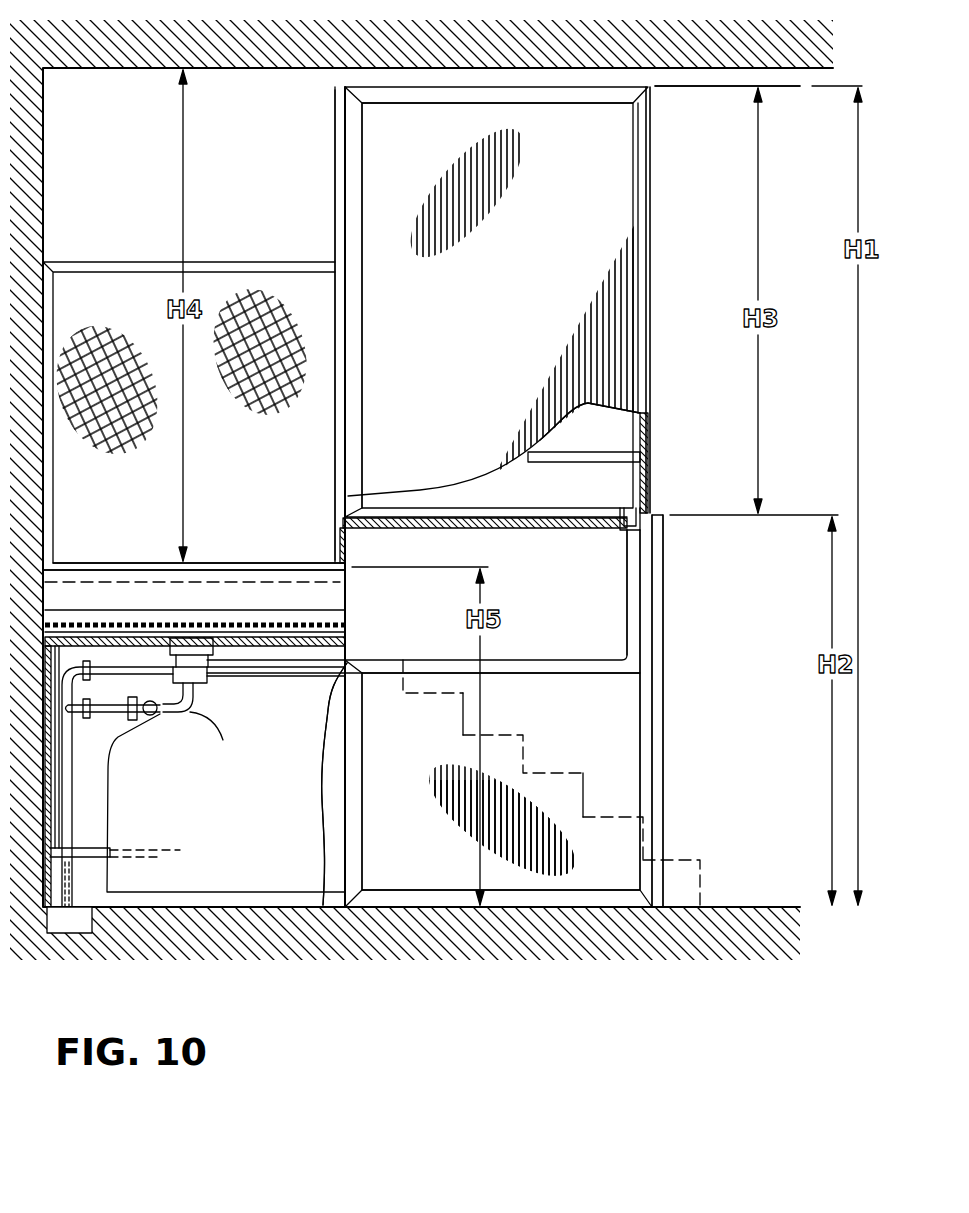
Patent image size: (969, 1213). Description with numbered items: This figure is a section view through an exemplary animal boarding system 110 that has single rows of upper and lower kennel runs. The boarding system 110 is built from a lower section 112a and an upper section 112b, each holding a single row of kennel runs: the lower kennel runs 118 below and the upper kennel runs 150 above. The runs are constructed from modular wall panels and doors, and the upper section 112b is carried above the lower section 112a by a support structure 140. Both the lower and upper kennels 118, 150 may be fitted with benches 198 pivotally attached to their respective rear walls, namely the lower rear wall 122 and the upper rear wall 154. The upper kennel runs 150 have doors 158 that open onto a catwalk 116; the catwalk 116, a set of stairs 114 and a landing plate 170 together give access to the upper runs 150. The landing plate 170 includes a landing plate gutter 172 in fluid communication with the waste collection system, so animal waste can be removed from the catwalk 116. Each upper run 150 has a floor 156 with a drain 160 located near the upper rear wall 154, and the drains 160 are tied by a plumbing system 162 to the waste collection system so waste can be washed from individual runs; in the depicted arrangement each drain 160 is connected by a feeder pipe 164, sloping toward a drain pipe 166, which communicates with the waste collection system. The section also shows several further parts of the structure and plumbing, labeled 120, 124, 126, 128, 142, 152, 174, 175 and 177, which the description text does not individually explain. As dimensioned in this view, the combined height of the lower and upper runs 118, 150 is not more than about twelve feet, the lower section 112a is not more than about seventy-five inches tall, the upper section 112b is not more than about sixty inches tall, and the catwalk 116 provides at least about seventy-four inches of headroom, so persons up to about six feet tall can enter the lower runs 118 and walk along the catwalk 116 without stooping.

The boarding system 110 is at (690, 195).
The lower section 112a is at (728, 574).
The upper section 112b is at (163, 130).
The set of stairs 114 is at (558, 773).
The catwalk 116 is at (112, 563).
The lower kennel runs 118 is at (690, 712).
The compartment region 120 is at (306, 786).
The lower rear wall 122 is at (63, 815).
The cabinet side wall 124 is at (665, 632).
The floor connection line 126 is at (705, 905).
The drain 128 is at (82, 935).
The support structure 140 is at (614, 791).
The cabinet liner wall 142 is at (362, 160).
The upper kennel runs 150 is at (314, 140).
The air flow 152 is at (450, 394).
The upper rear wall 154 is at (650, 470).
The floor 156 is at (409, 516).
The door 158 is at (333, 180).
The drain 160 is at (622, 528).
The plumbing system 162 is at (606, 642).
The feeder pipe 164 is at (498, 660).
The drain pipe 166 is at (107, 760).
The landing plate 170 is at (352, 627).
The landing plate gutter 172 is at (287, 632).
The support plate 174 is at (278, 610).
The valve 175 is at (213, 655).
The elbow fitting 177 is at (202, 727).
The bench 198 is at (552, 452).